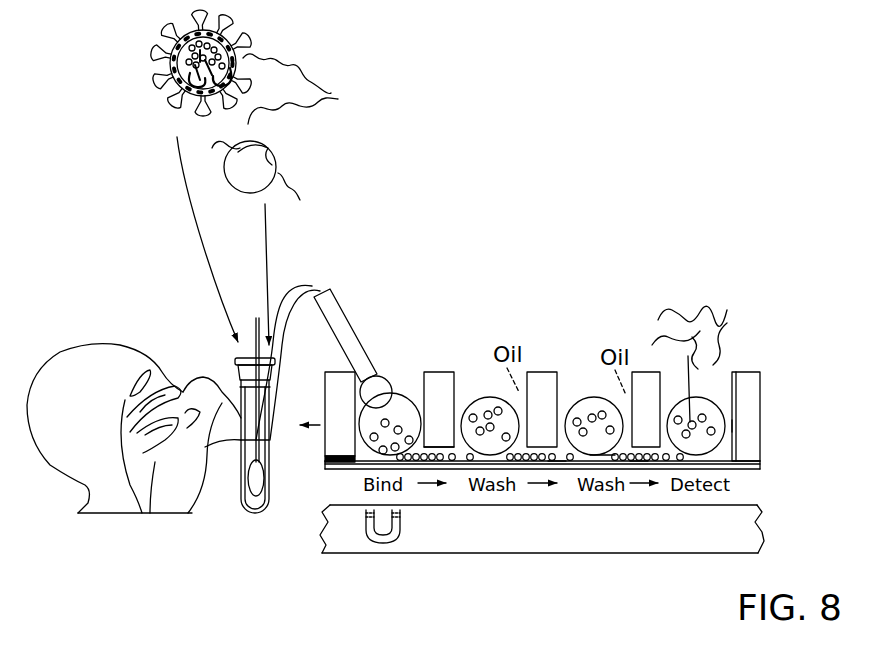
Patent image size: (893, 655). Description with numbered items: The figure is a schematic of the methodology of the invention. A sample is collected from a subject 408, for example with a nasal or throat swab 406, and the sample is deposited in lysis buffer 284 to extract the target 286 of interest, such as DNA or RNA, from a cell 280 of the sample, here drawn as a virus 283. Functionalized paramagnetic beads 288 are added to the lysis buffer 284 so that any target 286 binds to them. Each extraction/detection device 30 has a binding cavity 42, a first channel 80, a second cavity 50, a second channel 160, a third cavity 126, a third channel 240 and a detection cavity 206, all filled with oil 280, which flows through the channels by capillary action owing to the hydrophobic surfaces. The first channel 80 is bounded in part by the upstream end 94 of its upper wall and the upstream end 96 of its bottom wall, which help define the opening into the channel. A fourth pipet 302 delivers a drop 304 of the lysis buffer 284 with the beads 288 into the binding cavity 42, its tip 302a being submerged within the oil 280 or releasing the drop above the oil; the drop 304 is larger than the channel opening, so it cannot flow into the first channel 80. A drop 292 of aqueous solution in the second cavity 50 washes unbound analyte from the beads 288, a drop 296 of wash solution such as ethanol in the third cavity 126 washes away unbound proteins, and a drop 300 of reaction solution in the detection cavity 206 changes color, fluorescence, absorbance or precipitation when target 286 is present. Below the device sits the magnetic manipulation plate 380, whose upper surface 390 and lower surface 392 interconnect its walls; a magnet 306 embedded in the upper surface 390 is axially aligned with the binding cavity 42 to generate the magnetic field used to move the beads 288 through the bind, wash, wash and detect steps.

The virus particle 283 is at (155, 55).
The target 286 is at (312, 70).
The functionalized paramagnetic beads 288 is at (268, 137).
The nasal or throat swab 406 is at (257, 317).
The patient 408 is at (83, 343).
The lysis buffer 284 is at (250, 511).
The fourth pipet 302 is at (350, 318).
The tip of fourth pipet 302a is at (375, 357).
The oil 280 is at (380, 447).
The binding cavity 42 is at (406, 382).
The second cavity 50 is at (474, 382).
The third cavity 126 is at (573, 382).
The detection cavity 206 is at (724, 380).
The extraction/detection device 30 is at (788, 384).
The first channel 80 is at (439, 441).
The drop of reaction solution 300 is at (722, 424).
The drop of lysis buffer 304 is at (415, 465).
The upstream end of upper wall 94 is at (417, 460).
The upstream end of bottom wall 96 is at (420, 480).
The magnet 306 is at (380, 543).
The drop of aqueous solution 292 is at (492, 450).
The second channel 160 is at (557, 466).
The drop of wash solution 296 is at (604, 455).
The third channel 240 is at (638, 462).
The magnetic manipulation plate 380 is at (765, 522).
The upper surface 390 is at (742, 505).
The lower surface 392 is at (740, 555).